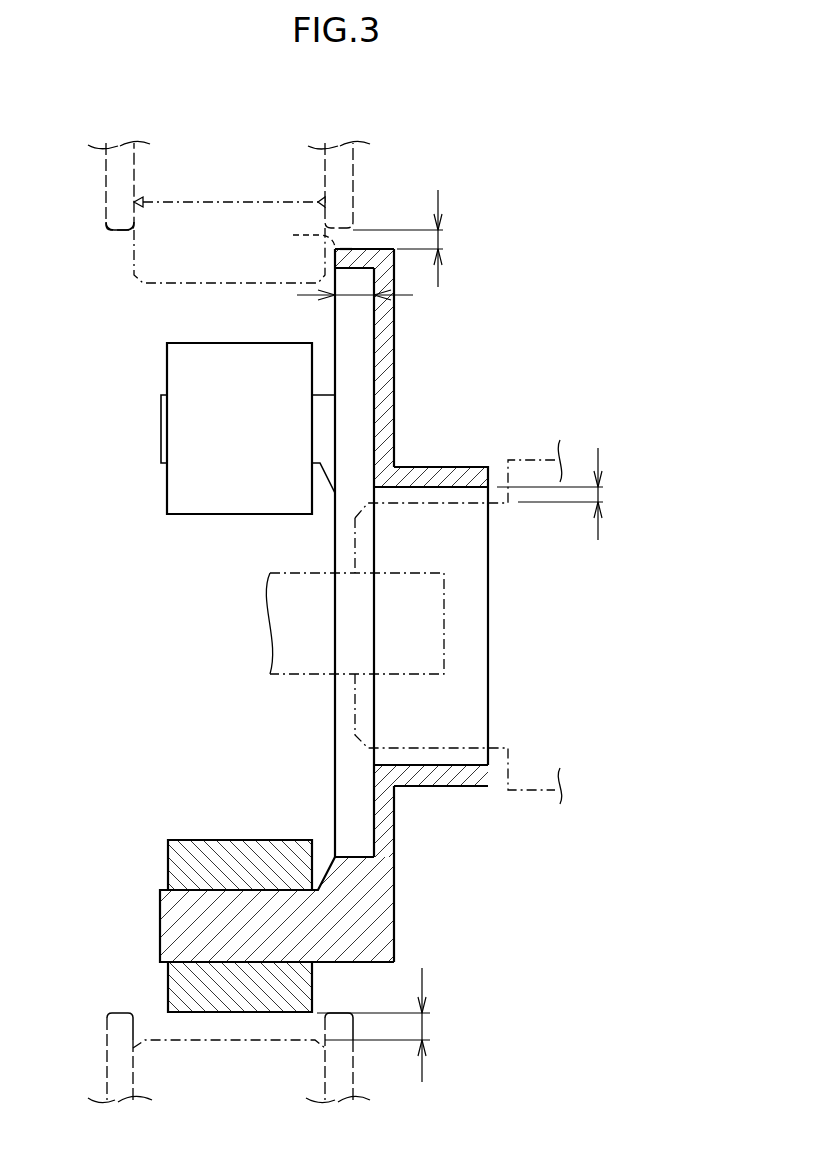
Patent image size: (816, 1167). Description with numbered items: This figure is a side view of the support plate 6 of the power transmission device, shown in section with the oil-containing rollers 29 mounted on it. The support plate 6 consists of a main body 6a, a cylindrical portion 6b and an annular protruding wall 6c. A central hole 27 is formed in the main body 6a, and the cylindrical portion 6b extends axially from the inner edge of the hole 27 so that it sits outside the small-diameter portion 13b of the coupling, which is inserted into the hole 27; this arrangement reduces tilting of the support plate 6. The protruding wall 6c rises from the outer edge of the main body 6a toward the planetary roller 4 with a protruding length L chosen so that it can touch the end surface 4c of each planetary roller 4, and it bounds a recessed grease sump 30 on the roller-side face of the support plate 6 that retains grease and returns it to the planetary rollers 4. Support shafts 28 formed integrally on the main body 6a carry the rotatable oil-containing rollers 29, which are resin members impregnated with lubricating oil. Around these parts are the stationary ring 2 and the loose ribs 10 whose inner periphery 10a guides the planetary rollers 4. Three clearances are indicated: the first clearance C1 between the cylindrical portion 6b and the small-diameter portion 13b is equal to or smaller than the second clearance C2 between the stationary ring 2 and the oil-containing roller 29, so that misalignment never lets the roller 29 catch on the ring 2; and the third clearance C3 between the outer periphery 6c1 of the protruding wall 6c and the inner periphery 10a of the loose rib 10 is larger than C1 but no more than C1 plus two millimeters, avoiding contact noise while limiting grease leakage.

The stationary ring 2 is at (308, 170).
The planetary roller 4 is at (150, 258).
The end surface 4c is at (293, 235).
The support plate 6 is at (388, 547).
The main body 6a is at (385, 348).
The cylindrical portion 6b is at (443, 474).
The protruding wall 6c is at (335, 258).
The outer periphery 6c1 is at (347, 248).
The loose rib 10 is at (118, 170).
The inner periphery 10a is at (113, 236).
The small-diameter portion 13b is at (465, 513).
The hole 27 is at (474, 549).
The support shaft 28 is at (278, 922).
The oil-containing roller 29 is at (220, 500).
The grease sump 30 is at (352, 343).
The first clearance C1 is at (567, 494).
The second clearance C2 is at (389, 1025).
The third clearance C3 is at (414, 238).
The protruding length L is at (402, 297).